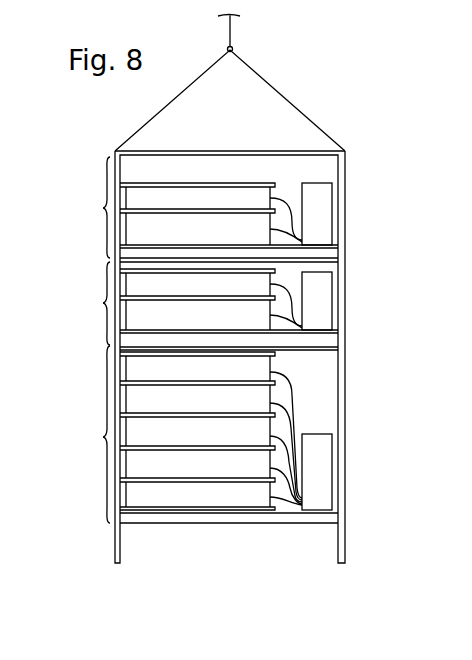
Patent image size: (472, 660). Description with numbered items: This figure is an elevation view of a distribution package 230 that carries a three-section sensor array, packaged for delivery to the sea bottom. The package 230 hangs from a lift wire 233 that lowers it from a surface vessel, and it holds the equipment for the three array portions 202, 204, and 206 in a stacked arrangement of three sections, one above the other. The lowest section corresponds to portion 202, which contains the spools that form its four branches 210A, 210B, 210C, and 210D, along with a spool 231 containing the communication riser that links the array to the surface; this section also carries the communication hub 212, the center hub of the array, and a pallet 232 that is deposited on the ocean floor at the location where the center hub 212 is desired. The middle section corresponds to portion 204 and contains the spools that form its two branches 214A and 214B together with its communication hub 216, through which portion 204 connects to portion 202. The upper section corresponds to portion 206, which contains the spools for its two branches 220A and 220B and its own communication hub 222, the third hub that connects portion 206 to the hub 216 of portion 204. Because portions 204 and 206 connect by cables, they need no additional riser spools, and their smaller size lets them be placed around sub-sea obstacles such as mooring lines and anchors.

The distribution package 230 is at (80, 528).
The lift wire 233 is at (232, 28).
The array portion 206 is at (105, 208).
The array portion 204 is at (106, 303).
The array portion 202 is at (103, 437).
The branch 220A is at (262, 192).
The branch 220B is at (257, 226).
The third hub 222 is at (318, 203).
The branch 214A is at (257, 282).
The branch 214B is at (258, 310).
The hub 216 is at (318, 298).
The branch 210A is at (257, 363).
The branch 210B is at (257, 395).
The branch 210C is at (257, 426).
The branch 210D is at (260, 458).
The center hub 212 is at (316, 497).
The spool 231 is at (247, 502).
The pallet 232 is at (190, 525).